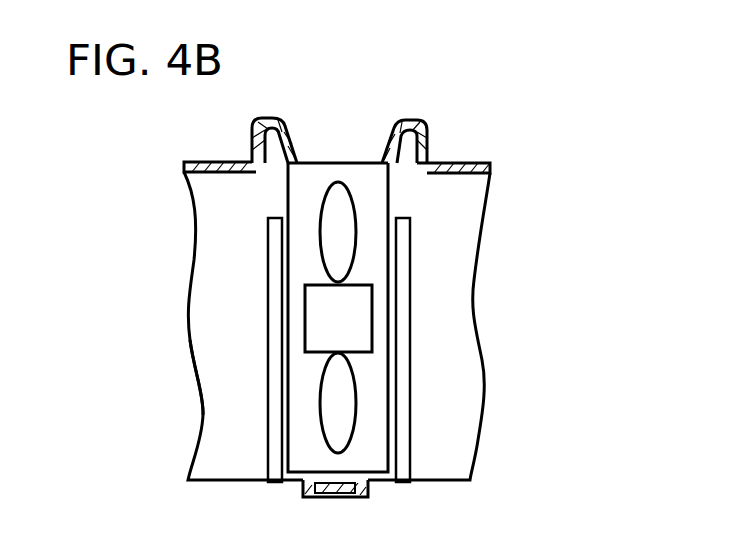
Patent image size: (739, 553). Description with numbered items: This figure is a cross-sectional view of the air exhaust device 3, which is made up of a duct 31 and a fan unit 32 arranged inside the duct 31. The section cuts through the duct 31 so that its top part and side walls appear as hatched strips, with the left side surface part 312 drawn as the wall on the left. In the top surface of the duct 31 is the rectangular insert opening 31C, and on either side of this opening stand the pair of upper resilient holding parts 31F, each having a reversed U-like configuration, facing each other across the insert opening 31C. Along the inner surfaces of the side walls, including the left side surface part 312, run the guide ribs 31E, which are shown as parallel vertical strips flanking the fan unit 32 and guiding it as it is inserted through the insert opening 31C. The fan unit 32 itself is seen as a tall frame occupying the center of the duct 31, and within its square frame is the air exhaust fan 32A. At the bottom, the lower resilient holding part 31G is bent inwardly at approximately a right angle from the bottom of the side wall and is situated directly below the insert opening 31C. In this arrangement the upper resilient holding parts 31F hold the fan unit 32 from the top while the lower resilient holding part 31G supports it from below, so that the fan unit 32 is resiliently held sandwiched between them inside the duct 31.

The air exhaust device 3 is at (596, 196).
The duct 31 is at (178, 278).
The insert opening 31C is at (336, 143).
The guide ribs 31E is at (268, 316).
The upper resilient holding parts 31F is at (415, 122).
The lower resilient holding part 31G is at (350, 492).
The left side surface part 312 is at (222, 422).
The fan unit 32 is at (400, 194).
The air exhaust fan 32A is at (340, 412).